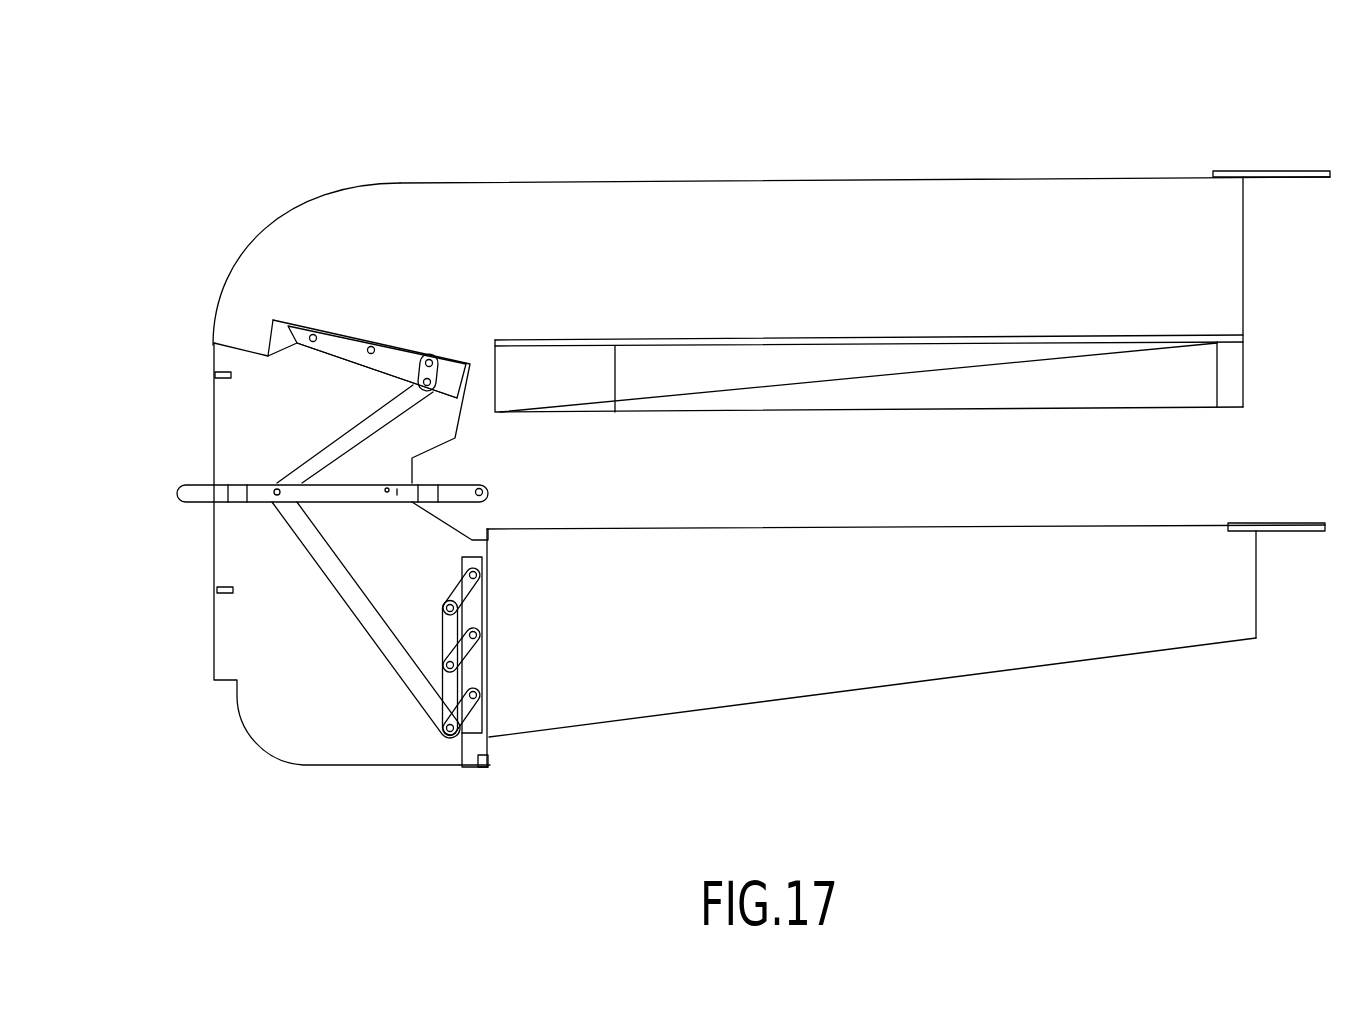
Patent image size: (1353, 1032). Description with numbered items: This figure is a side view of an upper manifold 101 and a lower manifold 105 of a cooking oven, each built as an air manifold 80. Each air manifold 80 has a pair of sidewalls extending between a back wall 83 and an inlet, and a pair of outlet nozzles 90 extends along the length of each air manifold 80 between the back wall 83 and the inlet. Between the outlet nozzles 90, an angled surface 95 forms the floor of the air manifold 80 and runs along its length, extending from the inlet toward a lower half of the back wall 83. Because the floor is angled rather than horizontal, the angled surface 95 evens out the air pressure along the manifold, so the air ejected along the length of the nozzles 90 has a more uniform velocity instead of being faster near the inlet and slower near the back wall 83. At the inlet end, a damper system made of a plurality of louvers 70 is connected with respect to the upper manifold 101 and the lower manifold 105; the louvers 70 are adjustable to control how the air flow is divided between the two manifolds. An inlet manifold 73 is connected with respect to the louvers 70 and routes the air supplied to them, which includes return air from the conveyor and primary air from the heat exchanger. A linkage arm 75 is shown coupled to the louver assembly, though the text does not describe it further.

The louvers 70 is at (307, 335).
The inlet manifold 73 is at (265, 645).
The arm 75 is at (190, 505).
The air manifold 80 is at (808, 188).
The back wall 83 is at (1243, 262).
The outlet nozzles 90 is at (1163, 408).
The angled surface 95 is at (1013, 363).
The upper manifold 101 is at (1114, 148).
The lower manifold 105 is at (995, 692).